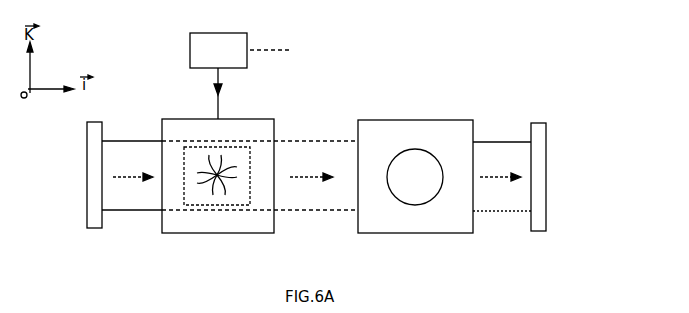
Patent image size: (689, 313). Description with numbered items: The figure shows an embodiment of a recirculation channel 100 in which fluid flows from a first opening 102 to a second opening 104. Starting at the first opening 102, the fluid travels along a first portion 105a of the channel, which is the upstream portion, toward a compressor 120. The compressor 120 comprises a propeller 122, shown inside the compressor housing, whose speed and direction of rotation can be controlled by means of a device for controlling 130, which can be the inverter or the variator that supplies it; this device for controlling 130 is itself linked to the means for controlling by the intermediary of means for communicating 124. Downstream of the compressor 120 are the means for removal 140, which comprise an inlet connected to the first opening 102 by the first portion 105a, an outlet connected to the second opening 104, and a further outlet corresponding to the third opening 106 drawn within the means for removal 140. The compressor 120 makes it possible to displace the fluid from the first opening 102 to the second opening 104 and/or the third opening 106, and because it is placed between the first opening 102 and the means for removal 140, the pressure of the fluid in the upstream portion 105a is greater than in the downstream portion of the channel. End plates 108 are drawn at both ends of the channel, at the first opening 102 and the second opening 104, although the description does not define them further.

The recirculation channel 100 is at (412, 57).
The first opening 102 is at (78, 176).
The second opening 104 is at (558, 178).
The first portion of the channel 105a is at (126, 212).
The third opening 106 is at (410, 150).
The end plate 108 is at (95, 230).
The compressor 120 is at (240, 119).
The propeller 122 is at (217, 176).
The means for communicating 124 is at (216, 104).
The device for controlling 130 is at (240, 50).
The means for removal 140 is at (448, 120).